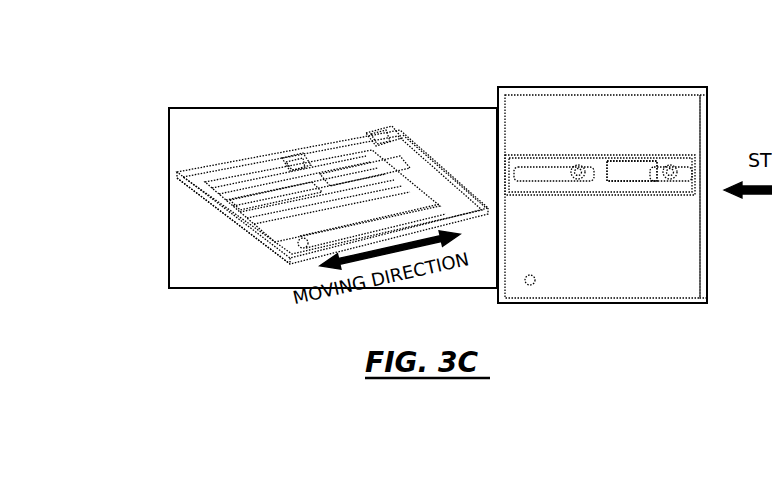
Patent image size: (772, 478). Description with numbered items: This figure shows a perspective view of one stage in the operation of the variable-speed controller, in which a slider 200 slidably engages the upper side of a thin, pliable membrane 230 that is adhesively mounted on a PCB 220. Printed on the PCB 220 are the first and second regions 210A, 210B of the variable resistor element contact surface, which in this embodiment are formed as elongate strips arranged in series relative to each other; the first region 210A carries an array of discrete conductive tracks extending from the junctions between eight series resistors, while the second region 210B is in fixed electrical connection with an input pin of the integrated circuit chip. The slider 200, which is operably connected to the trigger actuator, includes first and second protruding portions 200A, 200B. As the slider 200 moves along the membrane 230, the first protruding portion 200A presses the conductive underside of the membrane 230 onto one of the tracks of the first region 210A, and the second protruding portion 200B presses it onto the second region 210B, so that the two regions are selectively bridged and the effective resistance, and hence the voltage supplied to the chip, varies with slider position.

The slider 200 is at (215, 157).
The first protruding portion 200A is at (297, 157).
The second protruding portion 200B is at (668, 168).
The first region 210A is at (547, 176).
The second region 210B is at (607, 310).
The PCB 220 is at (250, 233).
The membrane 230 is at (415, 160).